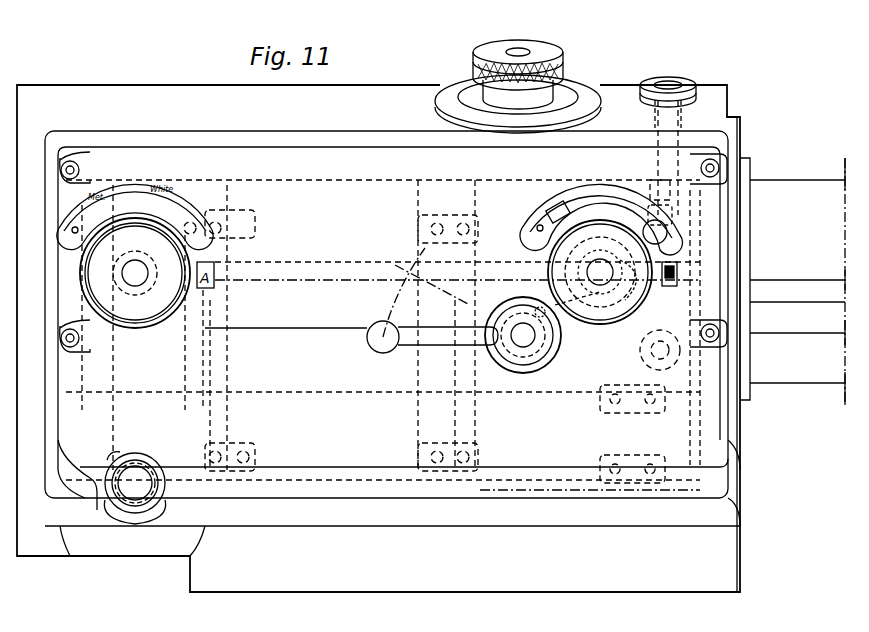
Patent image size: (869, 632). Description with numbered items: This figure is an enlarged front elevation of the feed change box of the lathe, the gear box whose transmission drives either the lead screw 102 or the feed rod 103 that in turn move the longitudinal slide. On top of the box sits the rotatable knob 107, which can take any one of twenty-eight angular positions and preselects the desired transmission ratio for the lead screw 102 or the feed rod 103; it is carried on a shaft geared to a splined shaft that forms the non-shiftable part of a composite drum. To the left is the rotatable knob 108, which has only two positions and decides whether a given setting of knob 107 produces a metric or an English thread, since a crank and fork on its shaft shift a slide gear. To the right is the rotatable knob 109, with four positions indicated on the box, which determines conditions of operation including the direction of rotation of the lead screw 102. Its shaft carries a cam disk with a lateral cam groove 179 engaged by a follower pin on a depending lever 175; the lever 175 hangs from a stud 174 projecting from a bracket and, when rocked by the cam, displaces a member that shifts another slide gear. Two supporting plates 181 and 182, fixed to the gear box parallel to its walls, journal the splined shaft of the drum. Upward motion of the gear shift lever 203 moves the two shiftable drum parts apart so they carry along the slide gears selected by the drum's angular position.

The lead screw 102 is at (790, 190).
The feed rod 103 is at (810, 378).
The rotatable knob 107 is at (566, 72).
The rotatable knob 108 is at (147, 312).
The rotatable knob 109 is at (563, 262).
The stud 174 is at (675, 220).
The depending lever 175 is at (628, 338).
The cam groove 179 is at (603, 318).
The supporting plate 181 is at (222, 386).
The supporting plate 182 is at (457, 370).
The gear shift lever 203 is at (422, 338).